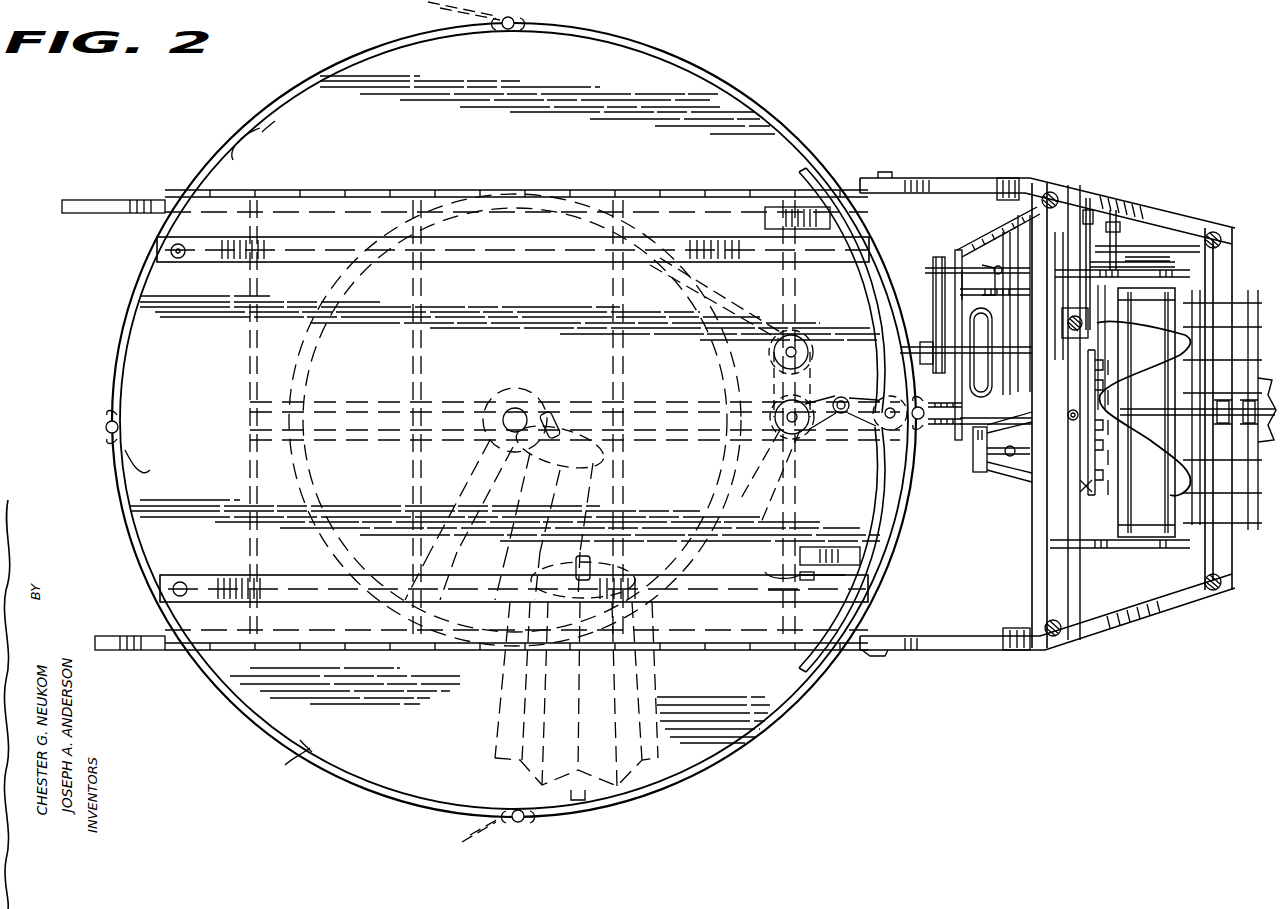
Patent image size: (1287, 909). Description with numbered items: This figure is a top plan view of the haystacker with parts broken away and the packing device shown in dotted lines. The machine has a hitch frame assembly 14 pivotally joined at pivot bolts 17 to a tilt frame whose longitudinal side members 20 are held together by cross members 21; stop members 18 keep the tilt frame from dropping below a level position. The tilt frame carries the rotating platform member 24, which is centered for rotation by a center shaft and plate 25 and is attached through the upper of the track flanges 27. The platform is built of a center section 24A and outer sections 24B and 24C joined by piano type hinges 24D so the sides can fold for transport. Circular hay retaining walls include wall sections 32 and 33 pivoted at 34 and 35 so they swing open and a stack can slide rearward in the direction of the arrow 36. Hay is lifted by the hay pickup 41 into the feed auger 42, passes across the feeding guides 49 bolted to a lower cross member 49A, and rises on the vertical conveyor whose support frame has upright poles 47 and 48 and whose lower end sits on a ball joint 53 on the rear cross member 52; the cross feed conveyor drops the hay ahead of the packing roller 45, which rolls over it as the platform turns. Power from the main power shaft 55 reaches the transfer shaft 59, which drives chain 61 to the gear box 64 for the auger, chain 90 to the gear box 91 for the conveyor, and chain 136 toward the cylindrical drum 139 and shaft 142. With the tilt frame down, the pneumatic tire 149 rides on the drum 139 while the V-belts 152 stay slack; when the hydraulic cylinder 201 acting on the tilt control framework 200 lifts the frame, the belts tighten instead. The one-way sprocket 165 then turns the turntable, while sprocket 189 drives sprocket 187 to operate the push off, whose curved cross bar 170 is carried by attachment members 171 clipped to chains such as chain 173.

The hitch frame assembly 14 is at (1180, 618).
The pivot bolts 17 is at (880, 657).
The stop members 18 is at (1012, 178).
The side members 20 is at (62, 206).
The cross members 21 is at (248, 398).
The platform member 24 is at (722, 104).
The center section 24A is at (145, 465).
The outer section 24B is at (235, 165).
The outer section 24C is at (315, 750).
The piano type hinges 24D is at (205, 190).
The center shaft and plate 25 is at (508, 390).
The flanges 27 is at (548, 196).
The wall section 32 is at (272, 740).
The wall section 33 is at (265, 125).
The pivot 34 is at (508, 818).
The pivot 35 is at (503, 28).
The arrow 36 is at (60, 392).
The hay pickup 41 is at (1235, 545).
The feed auger 42 is at (1132, 522).
The packing roller 45 is at (570, 395).
The upright pole 47 is at (1218, 232).
The upright pole 48 is at (1052, 194).
The feeding guides 49 is at (1095, 498).
The lower cross member 49A is at (1083, 492).
The rear cross member 52 is at (1082, 587).
The ball joint 53 is at (1073, 422).
The main power shaft 55 is at (1178, 427).
The transfer shaft 59 is at (1178, 245).
The chain 61 is at (1114, 218).
The gear box 64 is at (1089, 205).
The chain 90 is at (1100, 290).
The gear box 91 is at (1088, 330).
The chain 136 is at (1090, 348).
The cylindrical drum 139 is at (967, 435).
The shaft 142 is at (990, 235).
The pneumatic tire 149 is at (978, 290).
The V-belts 152 is at (930, 305).
The sprocket 165 is at (776, 315).
The curved cross bar 170 is at (868, 290).
The attachment members 171 is at (762, 218).
The chain 173 is at (775, 582).
The sprocket 187 is at (877, 435).
The sprocket 189 is at (775, 460).
The tilt control framework 200 is at (978, 468).
The hydraulic cylinder 201 is at (1022, 460).